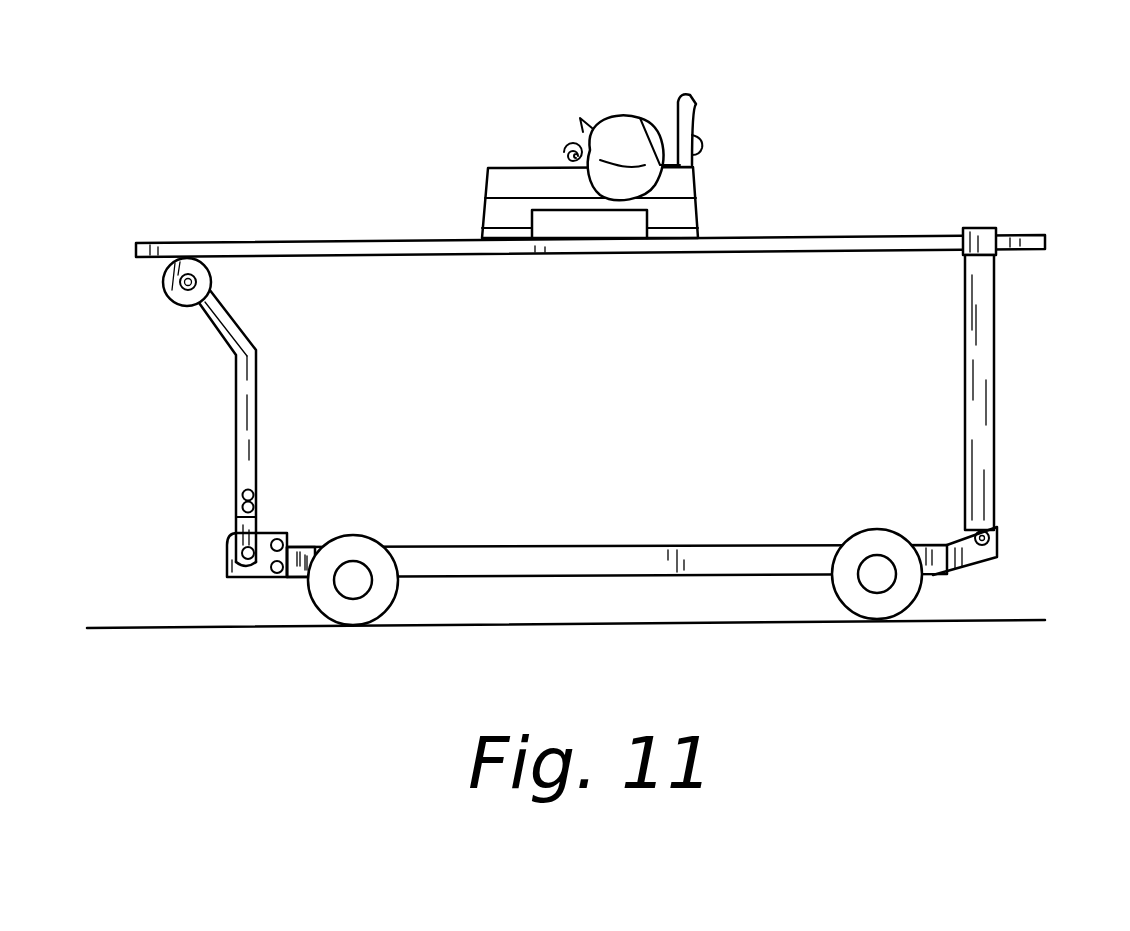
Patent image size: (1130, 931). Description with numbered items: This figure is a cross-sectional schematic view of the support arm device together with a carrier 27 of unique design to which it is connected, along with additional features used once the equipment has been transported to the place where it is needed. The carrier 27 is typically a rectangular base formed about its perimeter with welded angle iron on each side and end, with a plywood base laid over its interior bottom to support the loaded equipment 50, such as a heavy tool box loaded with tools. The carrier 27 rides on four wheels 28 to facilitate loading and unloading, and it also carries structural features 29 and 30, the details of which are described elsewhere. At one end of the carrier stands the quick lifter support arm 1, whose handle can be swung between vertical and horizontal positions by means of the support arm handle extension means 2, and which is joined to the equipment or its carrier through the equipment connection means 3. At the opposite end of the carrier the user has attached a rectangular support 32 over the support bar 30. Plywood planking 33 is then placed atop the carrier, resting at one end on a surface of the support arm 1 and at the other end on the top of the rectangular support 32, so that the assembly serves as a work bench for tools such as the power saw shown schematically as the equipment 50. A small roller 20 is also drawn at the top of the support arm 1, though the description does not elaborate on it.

The quick lifter support arm 1 is at (255, 417).
The support arm handle extension means 2 is at (235, 520).
The equipment connection means 3 is at (277, 535).
The front roller wheel 20 is at (166, 292).
The carrier 27 is at (662, 545).
The wheels 28 is at (857, 540).
The structural feature 29 is at (943, 540).
The support bar 30 is at (997, 531).
The rectangular support 32 is at (982, 412).
The planking 33 is at (820, 238).
The equipment 50 is at (610, 400).